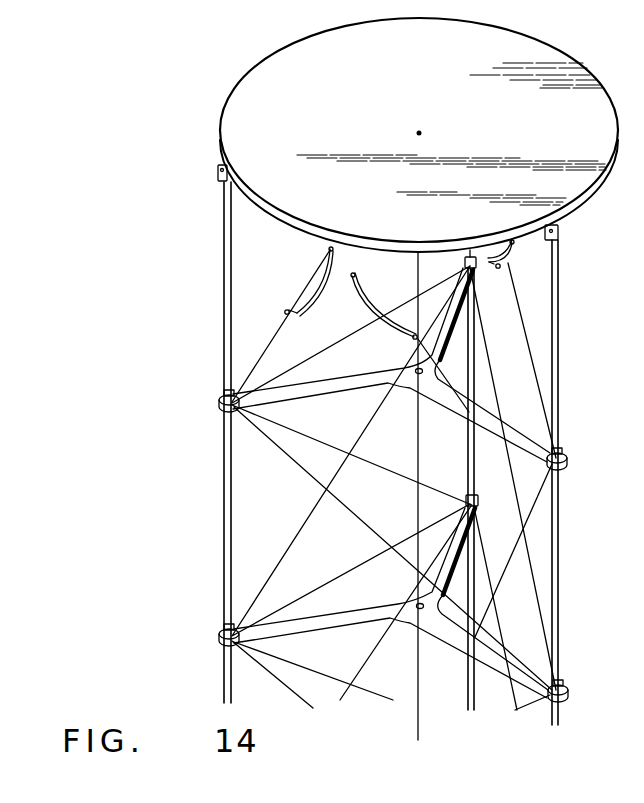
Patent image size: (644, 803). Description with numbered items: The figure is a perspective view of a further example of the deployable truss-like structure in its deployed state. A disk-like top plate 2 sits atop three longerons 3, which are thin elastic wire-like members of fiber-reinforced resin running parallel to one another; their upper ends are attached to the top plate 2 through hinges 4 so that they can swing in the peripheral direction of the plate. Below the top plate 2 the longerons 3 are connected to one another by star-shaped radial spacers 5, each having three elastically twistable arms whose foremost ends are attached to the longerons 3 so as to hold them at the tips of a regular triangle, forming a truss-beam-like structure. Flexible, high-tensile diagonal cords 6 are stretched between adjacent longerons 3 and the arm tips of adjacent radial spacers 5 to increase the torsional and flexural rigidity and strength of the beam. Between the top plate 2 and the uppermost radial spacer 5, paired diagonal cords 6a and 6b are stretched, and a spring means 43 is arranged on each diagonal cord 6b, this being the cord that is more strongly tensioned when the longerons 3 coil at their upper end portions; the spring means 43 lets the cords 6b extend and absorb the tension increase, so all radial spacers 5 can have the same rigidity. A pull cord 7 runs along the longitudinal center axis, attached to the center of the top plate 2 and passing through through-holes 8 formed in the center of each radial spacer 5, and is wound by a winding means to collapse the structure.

The top plate 2 is at (617, 134).
The longerons 3 is at (559, 360).
The hinges 4 is at (216, 169).
The radial spacers 5 is at (505, 427).
The diagonal cords 6 is at (307, 438).
The diagonal cord 6a is at (315, 251).
The diagonal cord 6b is at (265, 350).
The pull cord 7 is at (418, 688).
The through-holes 8 is at (413, 380).
The spring means 43 is at (283, 319).